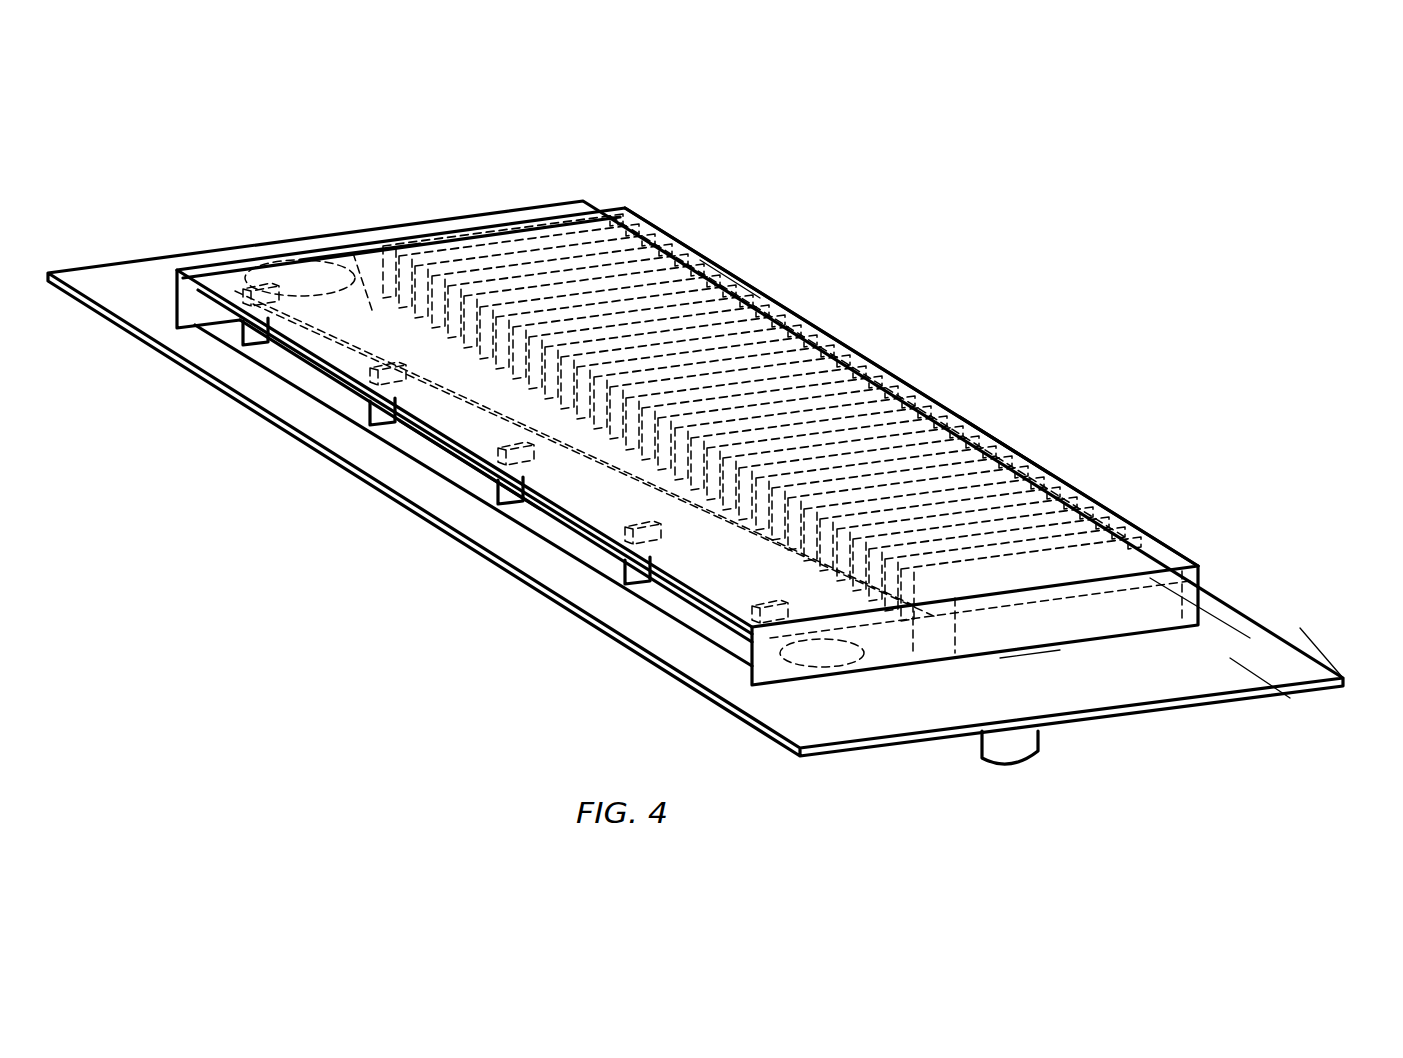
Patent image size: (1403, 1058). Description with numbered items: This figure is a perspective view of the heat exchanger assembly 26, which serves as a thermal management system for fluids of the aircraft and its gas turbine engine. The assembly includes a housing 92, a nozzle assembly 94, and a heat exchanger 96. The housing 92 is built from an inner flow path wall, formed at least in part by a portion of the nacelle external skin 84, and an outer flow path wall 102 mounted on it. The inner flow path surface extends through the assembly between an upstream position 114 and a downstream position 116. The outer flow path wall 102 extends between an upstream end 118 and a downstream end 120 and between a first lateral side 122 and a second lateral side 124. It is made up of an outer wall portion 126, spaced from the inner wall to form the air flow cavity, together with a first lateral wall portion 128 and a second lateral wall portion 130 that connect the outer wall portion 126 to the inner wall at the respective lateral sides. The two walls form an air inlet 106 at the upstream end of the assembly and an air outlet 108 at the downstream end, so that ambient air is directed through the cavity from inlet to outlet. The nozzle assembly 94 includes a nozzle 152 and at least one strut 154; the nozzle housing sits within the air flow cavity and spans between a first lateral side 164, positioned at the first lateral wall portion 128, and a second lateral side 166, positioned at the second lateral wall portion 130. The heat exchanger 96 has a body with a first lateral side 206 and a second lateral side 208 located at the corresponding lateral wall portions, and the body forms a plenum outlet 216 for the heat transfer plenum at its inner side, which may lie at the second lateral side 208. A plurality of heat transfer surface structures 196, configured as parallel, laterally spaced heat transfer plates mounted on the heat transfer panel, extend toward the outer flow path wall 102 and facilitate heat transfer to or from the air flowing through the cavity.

The heat exchanger assembly 26 is at (952, 297).
The nacelle external skin 84 is at (1290, 674).
The housing 92 is at (1158, 527).
The nozzle assembly 94 is at (676, 602).
The heat exchanger 96 is at (1144, 616).
The outer flow path wall 102 is at (668, 279).
The air inlet 106 is at (472, 506).
The air outlet 108 is at (997, 438).
The upstream position 114 is at (412, 478).
The downstream position 116 is at (1197, 625).
The upstream end 118 is at (262, 337).
The downstream end 120 is at (912, 388).
The first lateral side 122 is at (417, 237).
The second lateral side 124 is at (913, 647).
The outer wall portion 126 is at (640, 238).
The first lateral wall portion 128 is at (497, 226).
The second lateral wall portion 130 is at (965, 628).
The nozzle 152 is at (568, 582).
The strut 154 is at (385, 420).
The first lateral side 164 is at (232, 275).
The second lateral side 166 is at (813, 653).
The heat transfer surface structures 196 is at (748, 375).
The first lateral side 206 is at (360, 290).
The second lateral side 208 is at (1060, 652).
The plenum outlet 216 is at (1025, 748).